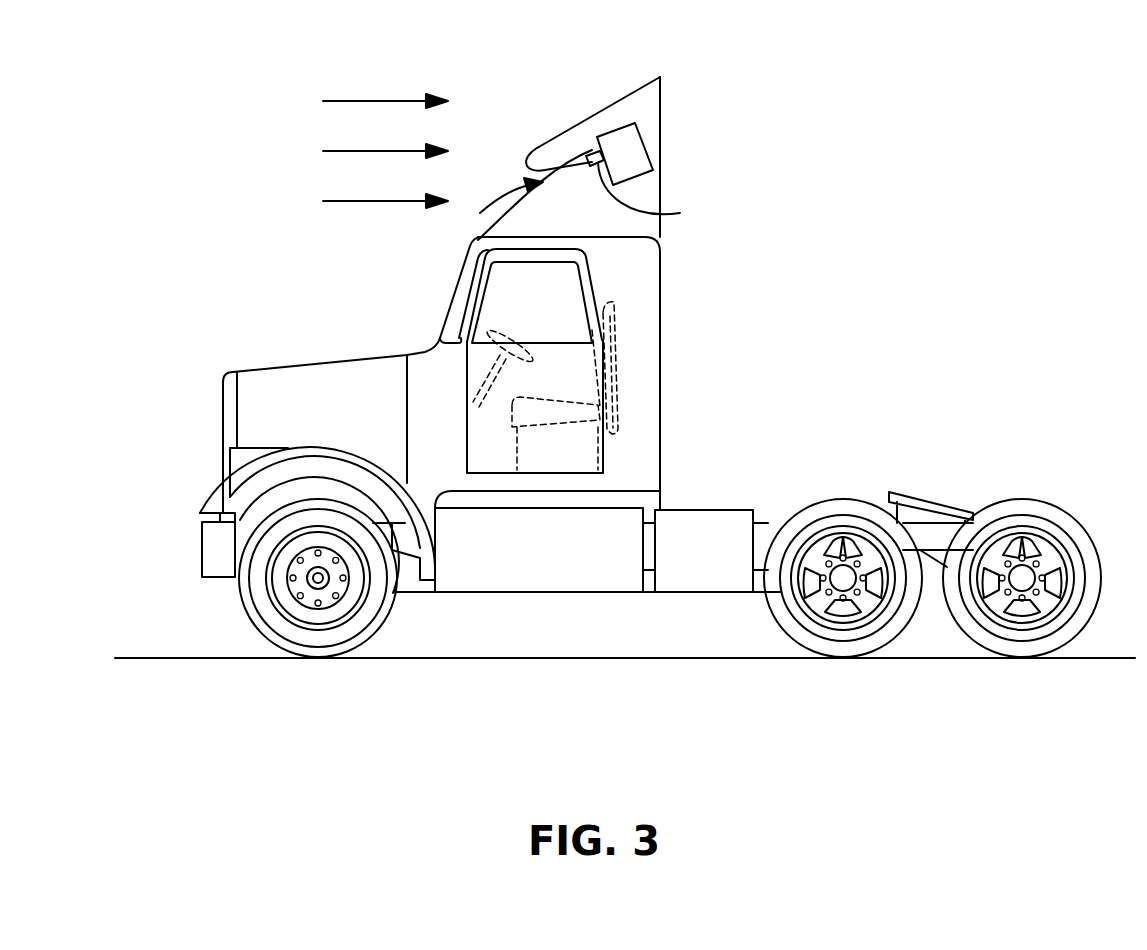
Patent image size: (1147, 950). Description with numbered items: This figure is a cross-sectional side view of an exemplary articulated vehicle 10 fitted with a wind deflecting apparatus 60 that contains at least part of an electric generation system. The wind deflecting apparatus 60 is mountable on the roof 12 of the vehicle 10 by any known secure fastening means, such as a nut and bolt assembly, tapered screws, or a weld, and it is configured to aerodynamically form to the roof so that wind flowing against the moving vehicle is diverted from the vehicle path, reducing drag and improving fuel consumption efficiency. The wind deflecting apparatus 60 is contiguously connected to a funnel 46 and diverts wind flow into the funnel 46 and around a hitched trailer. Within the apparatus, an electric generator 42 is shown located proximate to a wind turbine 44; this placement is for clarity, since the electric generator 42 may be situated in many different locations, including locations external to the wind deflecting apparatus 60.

The articulated vehicle 10 is at (835, 328).
The roof 12 is at (620, 234).
The electric generator 42 is at (635, 150).
The wind turbine 44 is at (680, 213).
The funnel 46 is at (573, 173).
The wind deflecting apparatus 60 is at (613, 97).